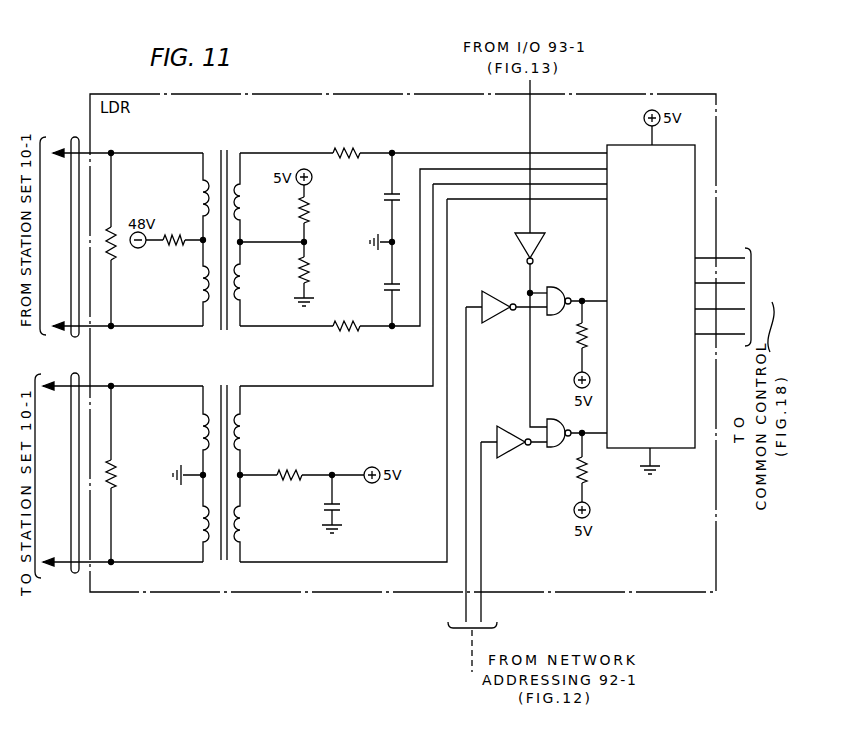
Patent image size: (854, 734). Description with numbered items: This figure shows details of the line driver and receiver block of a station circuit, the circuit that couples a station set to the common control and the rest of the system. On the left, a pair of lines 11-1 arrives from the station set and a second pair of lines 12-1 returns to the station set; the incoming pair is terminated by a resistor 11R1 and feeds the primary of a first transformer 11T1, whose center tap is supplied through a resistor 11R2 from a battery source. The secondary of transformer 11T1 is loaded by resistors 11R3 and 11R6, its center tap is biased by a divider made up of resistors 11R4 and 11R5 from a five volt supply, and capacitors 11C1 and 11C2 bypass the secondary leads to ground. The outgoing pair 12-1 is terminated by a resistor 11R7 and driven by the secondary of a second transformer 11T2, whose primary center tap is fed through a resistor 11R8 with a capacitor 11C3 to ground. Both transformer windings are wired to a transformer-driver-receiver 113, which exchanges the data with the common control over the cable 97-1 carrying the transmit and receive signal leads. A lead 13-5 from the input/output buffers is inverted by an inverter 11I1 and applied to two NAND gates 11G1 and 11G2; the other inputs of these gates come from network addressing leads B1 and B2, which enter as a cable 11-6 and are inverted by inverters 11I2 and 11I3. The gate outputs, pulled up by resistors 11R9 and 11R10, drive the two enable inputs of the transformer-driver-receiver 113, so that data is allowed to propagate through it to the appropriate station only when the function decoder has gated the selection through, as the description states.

The line pair from station set 10-1 11-1 is at (75, 137).
The line pair to station set 10-1 12-1 is at (76, 575).
The resistor 11R1 is at (117, 252).
The resistor 11R2 is at (175, 231).
The receive transformer 11T1 is at (222, 232).
The resistor 11R3 is at (348, 147).
The resistor 11R4 is at (313, 213).
The resistor 11R5 is at (313, 274).
The resistor 11R6 is at (348, 333).
The capacitor 11C1 is at (383, 197).
The capacitor 11C2 is at (384, 289).
The lead from I/O 93-1 13-5 is at (530, 118).
The transformer-driver-receiver 113 is at (612, 144).
The inverter 11I1 is at (516, 246).
The inverter 11I2 is at (501, 291).
The inverter 11I3 is at (505, 426).
The NAND gate 11G1 is at (555, 288).
The NAND gate 11G2 is at (552, 449).
The pull-up resistor 11R9 is at (575, 338).
The pull-up resistor 11R10 is at (590, 467).
The transmit transformer 11T2 is at (221, 463).
The resistor 11R7 is at (124, 478).
The resistor 11R8 is at (292, 470).
The capacitor 11C3 is at (342, 508).
The cable 97-1 is at (782, 298).
The network addressing lead B1 is at (481, 608).
The network addressing lead B2 is at (466, 608).
The leads from network addressing 92-1 11-6 is at (470, 648).